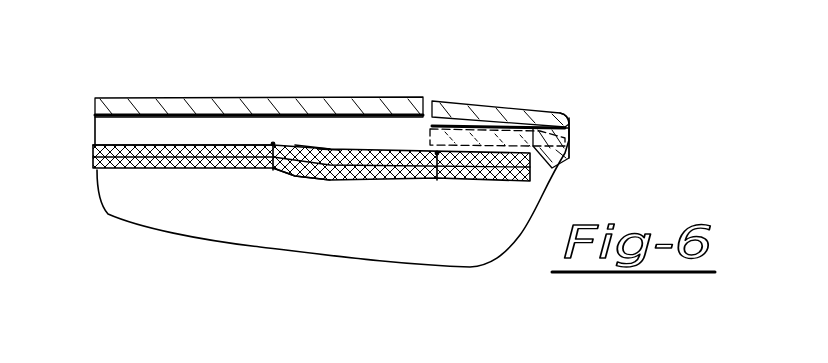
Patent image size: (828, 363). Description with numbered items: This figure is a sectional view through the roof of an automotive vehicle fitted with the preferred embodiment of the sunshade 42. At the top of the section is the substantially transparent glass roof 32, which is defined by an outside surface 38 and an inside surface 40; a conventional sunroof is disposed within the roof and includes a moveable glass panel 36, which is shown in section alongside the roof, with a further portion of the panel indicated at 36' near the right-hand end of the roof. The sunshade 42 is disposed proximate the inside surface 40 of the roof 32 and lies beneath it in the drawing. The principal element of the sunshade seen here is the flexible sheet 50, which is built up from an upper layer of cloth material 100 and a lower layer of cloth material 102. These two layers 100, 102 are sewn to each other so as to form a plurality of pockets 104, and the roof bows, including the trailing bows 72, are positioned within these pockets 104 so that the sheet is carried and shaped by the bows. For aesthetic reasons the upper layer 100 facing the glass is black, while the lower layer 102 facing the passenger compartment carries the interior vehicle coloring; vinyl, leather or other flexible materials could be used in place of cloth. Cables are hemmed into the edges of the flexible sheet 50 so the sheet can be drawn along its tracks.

The glass roof 32 is at (460, 108).
The moveable glass panel 36 is at (259, 70).
The folded end of top layer 36' is at (576, 170).
The outside surface 38 is at (505, 103).
The inside surface 40 is at (557, 123).
The sunshade 42 is at (203, 177).
The flexible sheet 50 is at (177, 145).
The trailing bows 72 is at (372, 180).
The upper layer of cloth material 100 is at (323, 150).
The lower layer of cloth material 102 is at (293, 170).
The pockets 104 is at (310, 150).